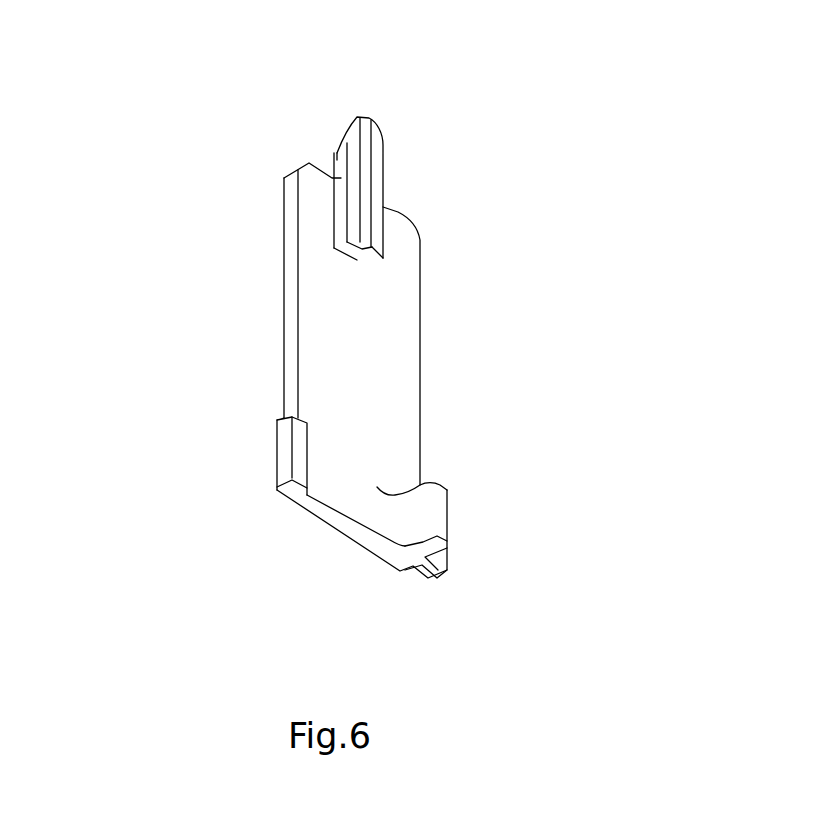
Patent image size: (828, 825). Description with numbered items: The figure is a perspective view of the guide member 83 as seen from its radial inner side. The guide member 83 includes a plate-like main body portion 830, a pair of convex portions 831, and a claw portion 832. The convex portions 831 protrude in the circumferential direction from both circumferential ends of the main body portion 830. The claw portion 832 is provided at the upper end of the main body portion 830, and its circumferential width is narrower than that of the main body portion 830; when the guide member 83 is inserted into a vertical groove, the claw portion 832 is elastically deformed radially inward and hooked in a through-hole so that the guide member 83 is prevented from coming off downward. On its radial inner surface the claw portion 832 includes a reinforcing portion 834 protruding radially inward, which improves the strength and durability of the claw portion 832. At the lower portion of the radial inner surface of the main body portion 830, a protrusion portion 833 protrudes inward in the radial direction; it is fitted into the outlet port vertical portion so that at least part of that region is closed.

The guide member 83 is at (298, 103).
The main body portion 830 is at (363, 340).
The convex portions 831 is at (315, 437).
The claw portion 832 is at (339, 152).
The protrusion portion 833 is at (447, 505).
The reinforcing portion 834 is at (383, 172).